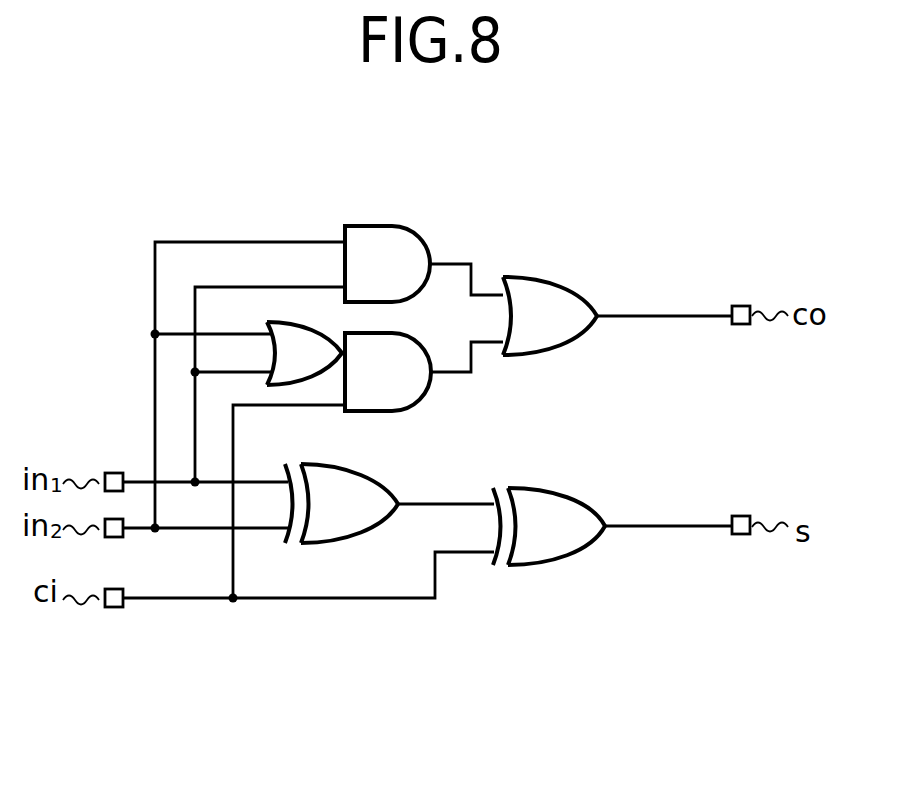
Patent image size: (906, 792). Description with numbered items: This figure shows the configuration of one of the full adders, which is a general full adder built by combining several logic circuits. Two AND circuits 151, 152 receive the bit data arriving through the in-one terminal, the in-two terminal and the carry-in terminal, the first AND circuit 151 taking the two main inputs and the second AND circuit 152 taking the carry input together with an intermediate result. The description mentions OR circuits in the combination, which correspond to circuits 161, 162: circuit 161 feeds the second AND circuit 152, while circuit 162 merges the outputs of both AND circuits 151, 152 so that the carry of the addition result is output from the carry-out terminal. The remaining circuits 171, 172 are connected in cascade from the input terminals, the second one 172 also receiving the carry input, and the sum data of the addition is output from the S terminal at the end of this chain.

The AND circuit 151 is at (416, 232).
The AND circuit 152 is at (415, 406).
The OR gate 161 is at (293, 323).
The OR gate 162 is at (566, 349).
The exclusive-OR gate 171 is at (342, 545).
The logic circuit 172 is at (575, 557).